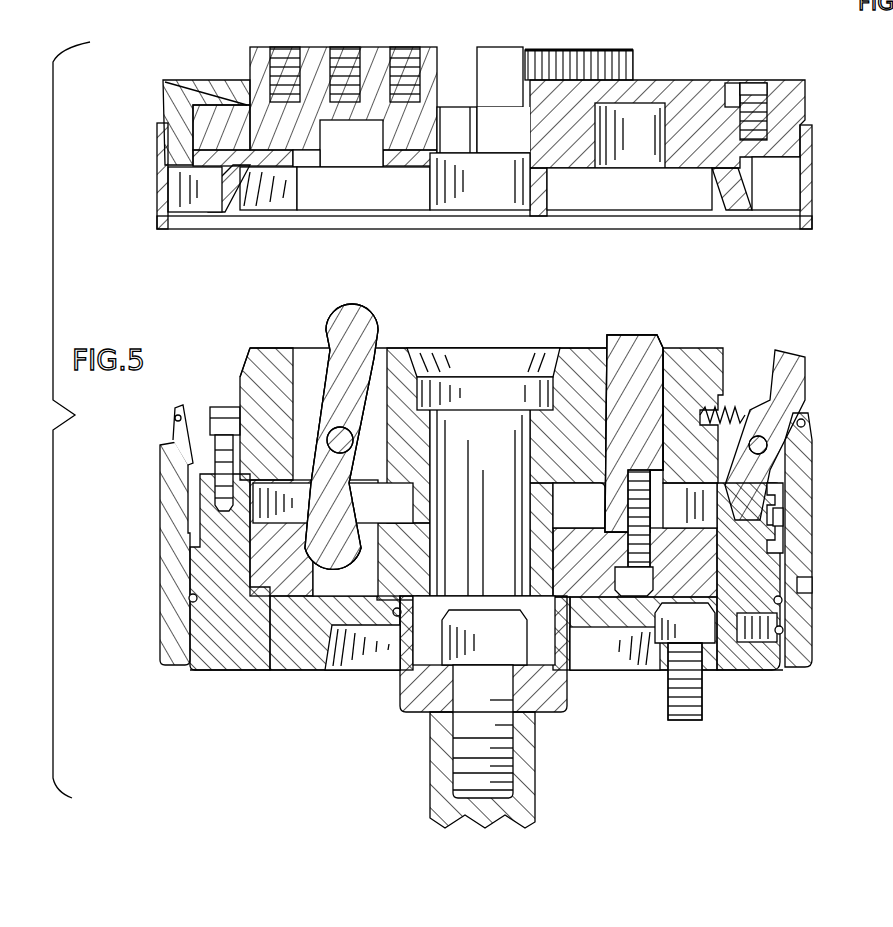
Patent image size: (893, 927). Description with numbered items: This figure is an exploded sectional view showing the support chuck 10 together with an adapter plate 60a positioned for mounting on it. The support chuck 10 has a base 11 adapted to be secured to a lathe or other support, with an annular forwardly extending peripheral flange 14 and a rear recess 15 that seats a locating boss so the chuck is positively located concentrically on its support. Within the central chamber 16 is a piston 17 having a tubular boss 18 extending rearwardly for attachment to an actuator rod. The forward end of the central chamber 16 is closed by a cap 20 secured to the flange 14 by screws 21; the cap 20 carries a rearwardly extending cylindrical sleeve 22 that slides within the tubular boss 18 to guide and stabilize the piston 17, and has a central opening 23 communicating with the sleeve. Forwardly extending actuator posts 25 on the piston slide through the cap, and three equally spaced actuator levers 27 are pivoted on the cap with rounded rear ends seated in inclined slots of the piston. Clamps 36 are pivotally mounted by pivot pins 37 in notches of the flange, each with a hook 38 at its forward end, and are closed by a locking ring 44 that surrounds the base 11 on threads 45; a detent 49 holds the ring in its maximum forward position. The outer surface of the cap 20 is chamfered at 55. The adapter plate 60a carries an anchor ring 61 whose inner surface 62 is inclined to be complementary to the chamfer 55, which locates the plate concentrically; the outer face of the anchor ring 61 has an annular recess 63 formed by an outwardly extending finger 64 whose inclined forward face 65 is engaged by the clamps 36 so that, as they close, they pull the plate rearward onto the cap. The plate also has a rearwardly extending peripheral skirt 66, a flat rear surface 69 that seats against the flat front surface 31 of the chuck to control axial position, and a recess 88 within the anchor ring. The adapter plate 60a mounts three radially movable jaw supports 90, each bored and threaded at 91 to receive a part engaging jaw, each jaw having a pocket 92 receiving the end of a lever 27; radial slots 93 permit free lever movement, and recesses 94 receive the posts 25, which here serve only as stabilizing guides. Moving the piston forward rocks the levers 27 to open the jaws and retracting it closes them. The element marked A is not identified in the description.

The support chuck 10 is at (468, 316).
The base 11 is at (207, 672).
The peripheral flange 14 is at (218, 577).
The recess 15 is at (347, 630).
The central chamber 16 is at (585, 511).
The piston 17 is at (268, 578).
The tubular boss 18 is at (560, 693).
The cap 20 is at (272, 346).
The screws 21 is at (228, 422).
The cylindrical sleeve 22 is at (432, 512).
The central opening 23 is at (480, 360).
The actuator posts 25 is at (646, 333).
The actuator levers 27 is at (342, 300).
The front surface 31 is at (680, 348).
The clamp 36 is at (746, 354).
The pivot pin 37 is at (762, 440).
The hook 38 is at (770, 365).
The locking ring 44 is at (816, 460).
The threads 45 is at (780, 515).
The detent 49 is at (745, 642).
The chamfer 55 is at (243, 362).
The adapter plate 60a is at (718, 52).
The anchor ring 61 is at (218, 214).
The inner surface 62 is at (707, 185).
The annular recess 63 is at (808, 205).
The finger 64 is at (203, 197).
The forward face 65 is at (750, 183).
The peripheral skirt 66 is at (157, 178).
The rear surface 69 is at (388, 180).
The recess 88 is at (640, 190).
The jaw supports 90 is at (318, 58).
The threaded bore 91 is at (350, 52).
The pocket 92 is at (328, 138).
The radial slots 93 is at (303, 160).
The recesses 94 is at (615, 158).
The base A is at (535, 785).